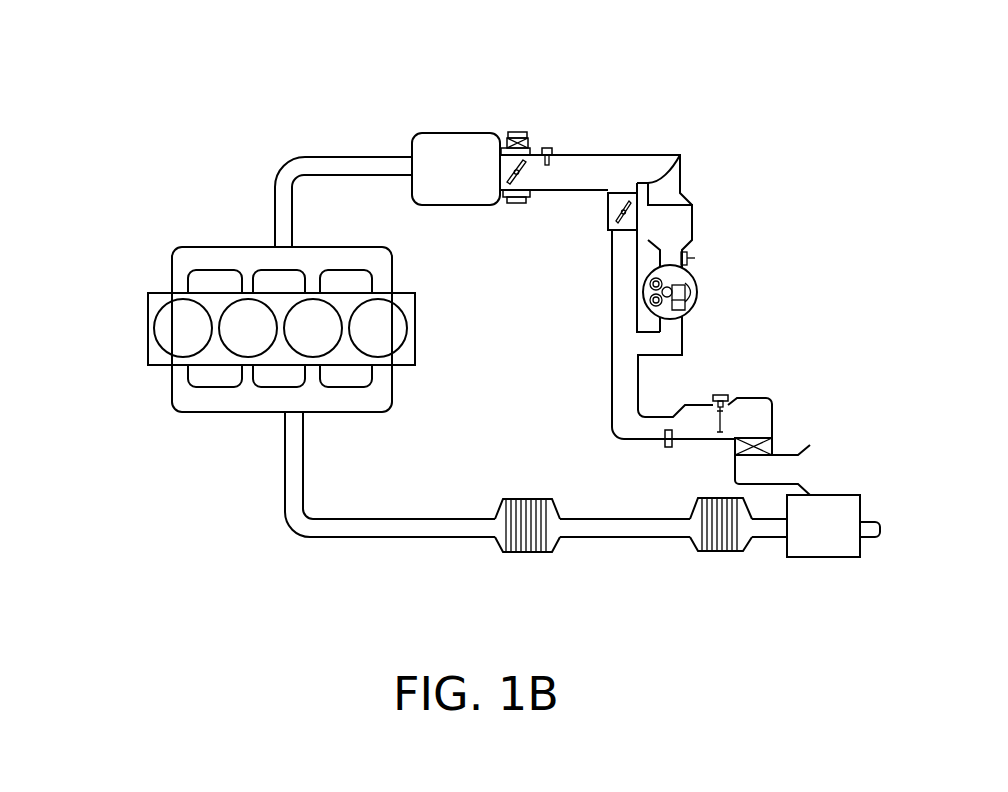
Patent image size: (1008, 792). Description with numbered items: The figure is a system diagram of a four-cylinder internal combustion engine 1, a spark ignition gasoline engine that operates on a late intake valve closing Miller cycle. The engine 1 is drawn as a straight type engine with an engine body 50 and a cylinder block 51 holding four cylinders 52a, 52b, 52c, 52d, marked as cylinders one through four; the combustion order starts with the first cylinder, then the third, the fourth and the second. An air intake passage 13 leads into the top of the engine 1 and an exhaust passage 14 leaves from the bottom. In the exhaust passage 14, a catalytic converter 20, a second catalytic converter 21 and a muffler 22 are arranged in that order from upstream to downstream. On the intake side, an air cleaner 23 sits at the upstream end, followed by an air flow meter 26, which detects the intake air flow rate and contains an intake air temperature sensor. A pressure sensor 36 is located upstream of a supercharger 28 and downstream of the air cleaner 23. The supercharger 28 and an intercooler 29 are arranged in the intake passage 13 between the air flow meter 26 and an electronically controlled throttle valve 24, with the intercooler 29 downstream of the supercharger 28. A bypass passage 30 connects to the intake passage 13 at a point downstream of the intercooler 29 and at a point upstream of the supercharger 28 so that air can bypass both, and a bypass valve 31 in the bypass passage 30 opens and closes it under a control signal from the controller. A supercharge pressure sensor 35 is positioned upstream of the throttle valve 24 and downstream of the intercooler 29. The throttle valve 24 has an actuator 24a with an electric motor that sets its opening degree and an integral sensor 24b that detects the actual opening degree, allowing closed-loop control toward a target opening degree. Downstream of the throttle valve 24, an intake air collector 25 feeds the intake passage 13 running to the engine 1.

The internal combustion engine 1 is at (123, 376).
The air intake passage 13 is at (323, 168).
The exhaust passage 14 is at (298, 450).
The catalytic converter 20 is at (527, 552).
The second catalytic converter 21 is at (713, 547).
The muffler 22 is at (815, 548).
The air cleaner 23 is at (773, 442).
The electronically controlled throttle valve 24 is at (506, 116).
The actuator 24a is at (529, 138).
The sensor 24b is at (530, 204).
The intake air collector 25 is at (447, 145).
The air flow meter 26 is at (727, 396).
The supercharger 28 is at (702, 295).
The intercooler 29 is at (694, 193).
The bypass passage 30 is at (617, 290).
The bypass valve 31 is at (646, 195).
The supercharge pressure sensor 35 is at (564, 146).
The pressure sensor 36 is at (665, 457).
The engine body 50 is at (232, 250).
The cylinder block 51 is at (242, 402).
The cylinder 52a is at (167, 317).
The cylinder 52b is at (238, 348).
The cylinder 52c is at (327, 348).
The cylinder 52d is at (388, 305).